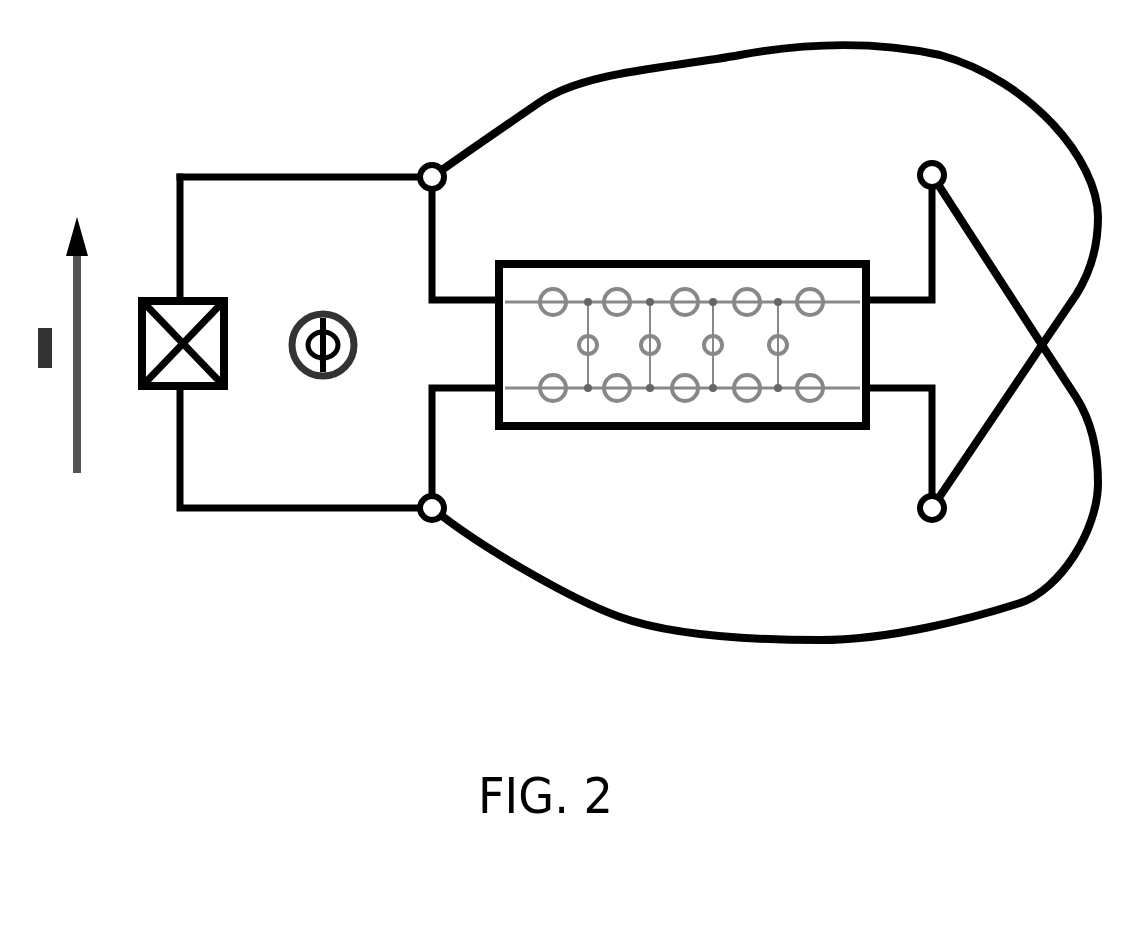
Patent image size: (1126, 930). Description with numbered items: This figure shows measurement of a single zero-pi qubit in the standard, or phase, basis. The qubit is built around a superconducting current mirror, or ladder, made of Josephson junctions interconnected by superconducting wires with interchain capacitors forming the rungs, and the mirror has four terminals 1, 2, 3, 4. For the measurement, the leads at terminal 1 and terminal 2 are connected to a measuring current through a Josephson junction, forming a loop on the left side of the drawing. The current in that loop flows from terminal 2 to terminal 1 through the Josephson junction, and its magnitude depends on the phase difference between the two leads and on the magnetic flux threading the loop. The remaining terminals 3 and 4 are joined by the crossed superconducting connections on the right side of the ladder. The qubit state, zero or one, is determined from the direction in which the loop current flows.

The terminal 1 is at (416, 139).
The terminal 2 is at (415, 545).
The terminal 3 is at (962, 525).
The terminal 4 is at (952, 151).